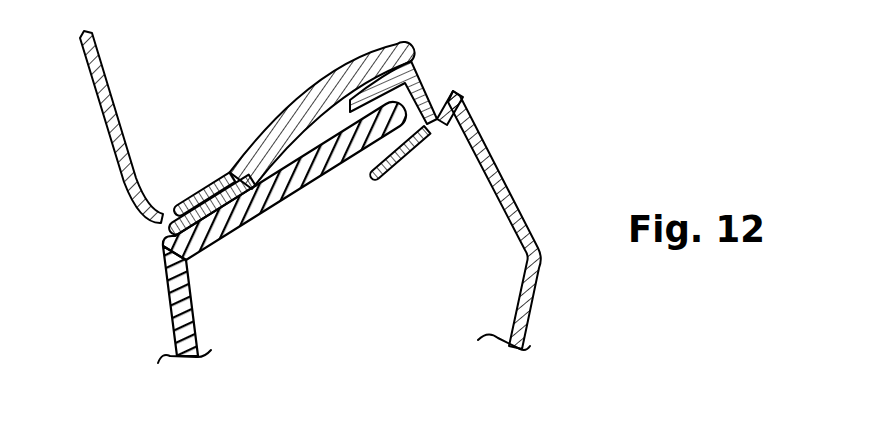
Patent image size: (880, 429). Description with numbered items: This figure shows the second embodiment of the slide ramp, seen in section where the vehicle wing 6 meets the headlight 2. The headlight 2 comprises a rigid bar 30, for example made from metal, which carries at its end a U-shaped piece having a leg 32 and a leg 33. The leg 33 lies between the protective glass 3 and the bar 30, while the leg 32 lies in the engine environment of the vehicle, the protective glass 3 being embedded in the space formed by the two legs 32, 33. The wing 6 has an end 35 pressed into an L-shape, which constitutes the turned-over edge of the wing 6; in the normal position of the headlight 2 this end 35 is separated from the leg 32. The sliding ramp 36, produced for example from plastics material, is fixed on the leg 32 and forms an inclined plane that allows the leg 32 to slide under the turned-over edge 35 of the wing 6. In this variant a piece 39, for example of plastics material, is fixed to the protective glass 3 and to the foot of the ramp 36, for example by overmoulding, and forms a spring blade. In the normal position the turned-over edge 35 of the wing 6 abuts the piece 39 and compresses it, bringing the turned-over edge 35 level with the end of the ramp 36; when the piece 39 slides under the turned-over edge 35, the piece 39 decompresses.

The headlight 2 is at (351, 175).
The protective glass 3 is at (250, 216).
The wing 6 is at (105, 142).
The rigid bar 30 is at (497, 183).
The leg 32 is at (420, 70).
The leg 33 is at (423, 171).
The end 35 is at (168, 205).
The sliding ramp 36 is at (363, 63).
The piece 39 is at (168, 234).